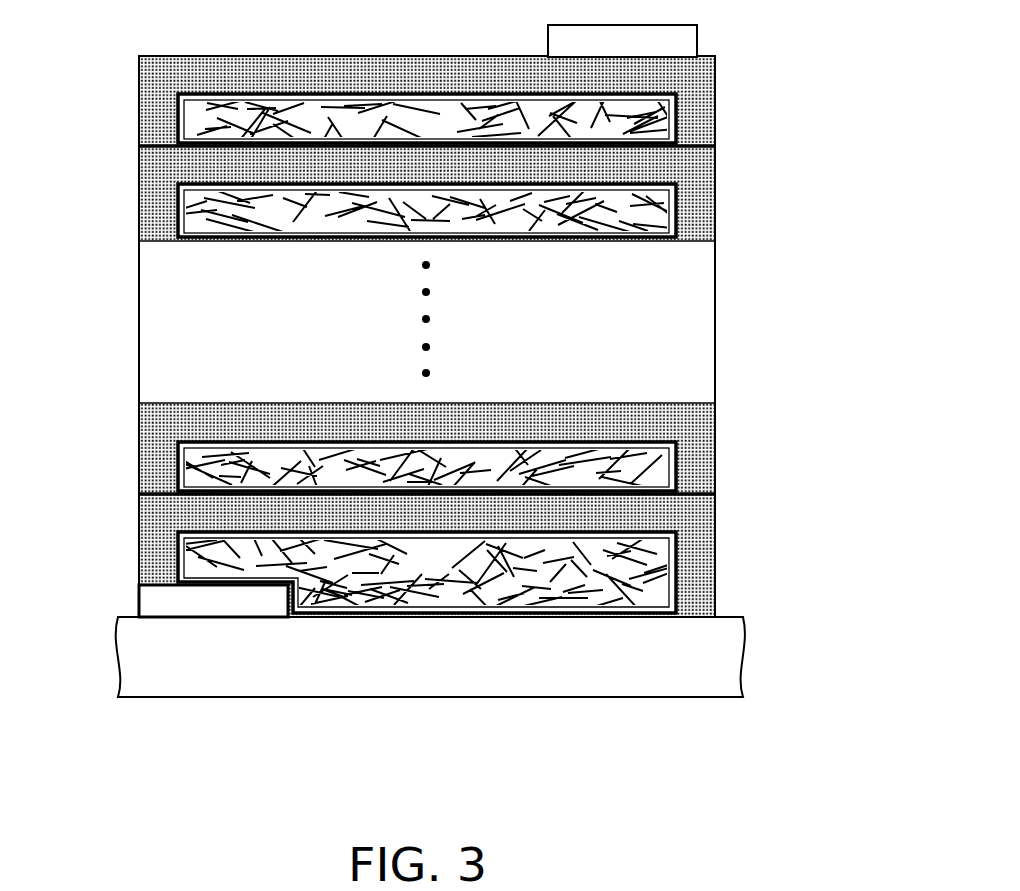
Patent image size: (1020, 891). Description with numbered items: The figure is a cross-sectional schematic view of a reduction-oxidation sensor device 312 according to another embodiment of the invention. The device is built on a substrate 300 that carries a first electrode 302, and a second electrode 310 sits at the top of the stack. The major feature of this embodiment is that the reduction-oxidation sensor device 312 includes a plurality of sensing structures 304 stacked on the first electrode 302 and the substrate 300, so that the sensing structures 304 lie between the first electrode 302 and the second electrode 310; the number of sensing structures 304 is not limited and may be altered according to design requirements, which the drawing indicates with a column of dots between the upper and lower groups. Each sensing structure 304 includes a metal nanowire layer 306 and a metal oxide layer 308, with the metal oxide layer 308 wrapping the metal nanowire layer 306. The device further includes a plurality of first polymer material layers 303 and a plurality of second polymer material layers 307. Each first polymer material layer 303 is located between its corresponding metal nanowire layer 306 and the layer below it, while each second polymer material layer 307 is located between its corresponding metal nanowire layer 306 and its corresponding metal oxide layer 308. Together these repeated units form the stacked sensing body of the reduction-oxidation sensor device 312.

The substrate 300 is at (167, 667).
The first electrode 302 is at (170, 599).
The first polymer material layer 303 is at (175, 138).
The sensing structure 304 is at (462, 336).
The metal nanowire layer 306 is at (657, 123).
The second polymer material layer 307 is at (177, 113).
The metal oxide layer 308 is at (697, 95).
The second electrode 310 is at (687, 43).
The reduction-oxidation sensor device 312 is at (805, 763).